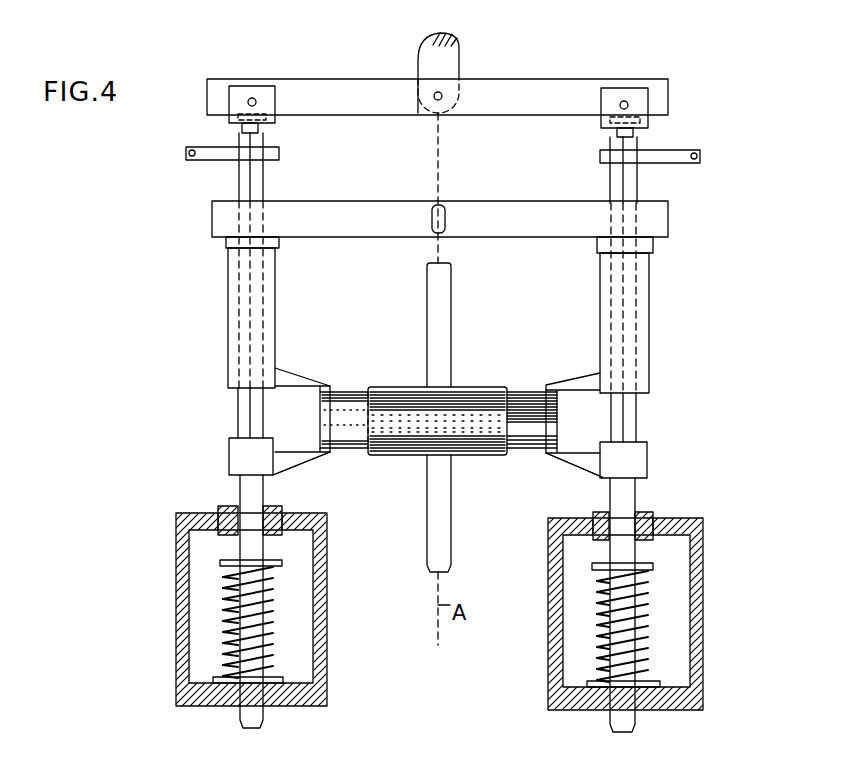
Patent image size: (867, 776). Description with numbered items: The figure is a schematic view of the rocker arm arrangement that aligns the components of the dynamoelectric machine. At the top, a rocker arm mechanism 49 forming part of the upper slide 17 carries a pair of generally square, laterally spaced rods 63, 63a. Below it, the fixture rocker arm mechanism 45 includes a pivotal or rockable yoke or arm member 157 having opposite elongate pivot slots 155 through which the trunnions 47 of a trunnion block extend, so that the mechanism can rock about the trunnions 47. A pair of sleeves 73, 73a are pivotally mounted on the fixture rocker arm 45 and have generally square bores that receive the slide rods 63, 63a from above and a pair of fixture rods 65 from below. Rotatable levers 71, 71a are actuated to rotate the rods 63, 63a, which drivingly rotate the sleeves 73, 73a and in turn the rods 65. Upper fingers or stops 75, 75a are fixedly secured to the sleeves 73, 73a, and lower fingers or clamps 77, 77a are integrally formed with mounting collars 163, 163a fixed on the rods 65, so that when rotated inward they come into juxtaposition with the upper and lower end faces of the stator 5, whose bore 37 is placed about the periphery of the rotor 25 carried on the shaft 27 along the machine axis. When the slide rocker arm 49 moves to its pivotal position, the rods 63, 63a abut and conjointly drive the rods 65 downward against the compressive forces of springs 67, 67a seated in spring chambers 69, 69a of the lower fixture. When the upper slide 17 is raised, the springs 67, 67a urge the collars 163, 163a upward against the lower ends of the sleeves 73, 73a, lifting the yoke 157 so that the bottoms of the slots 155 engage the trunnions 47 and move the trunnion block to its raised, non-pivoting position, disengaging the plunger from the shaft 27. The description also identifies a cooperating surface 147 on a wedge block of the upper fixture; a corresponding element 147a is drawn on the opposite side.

The stator 5 is at (409, 440).
The upper slide 17 is at (476, 68).
The rotor 25 is at (472, 387).
The shaft 27 is at (447, 288).
The bore 37 is at (368, 428).
The rocker arm mechanism 45 is at (440, 194).
The trunnions 47 is at (428, 219).
The rocker arm mechanism 49 is at (566, 78).
The rod 63 is at (243, 186).
The rod 63a is at (638, 185).
The rod 65 is at (240, 490).
The spring 67 is at (270, 635).
The spring 67a is at (645, 625).
The spring chamber 69 is at (176, 648).
The spring chamber 69a is at (548, 657).
The rotatable lever 71 is at (190, 152).
The rotatable lever 71a is at (702, 158).
The sleeve 73 is at (228, 340).
The sleeve 73a is at (650, 330).
The upper finger 75 is at (290, 375).
The upper finger 75a is at (572, 378).
The lower finger 77 is at (293, 462).
The lower finger 77a is at (575, 462).
The cooperating surface 147 is at (238, 296).
The inner rod 147a is at (636, 285).
The elongate pivot slots 155 is at (431, 221).
The yoke 157 is at (343, 205).
The mounting collar 163 is at (233, 456).
The mounting collar 163a is at (650, 462).